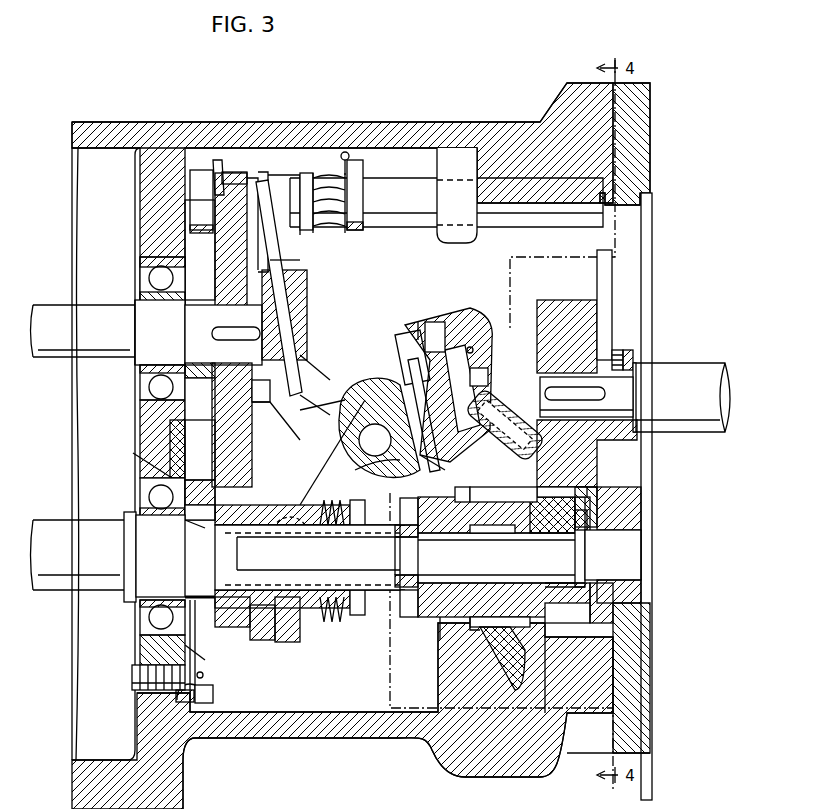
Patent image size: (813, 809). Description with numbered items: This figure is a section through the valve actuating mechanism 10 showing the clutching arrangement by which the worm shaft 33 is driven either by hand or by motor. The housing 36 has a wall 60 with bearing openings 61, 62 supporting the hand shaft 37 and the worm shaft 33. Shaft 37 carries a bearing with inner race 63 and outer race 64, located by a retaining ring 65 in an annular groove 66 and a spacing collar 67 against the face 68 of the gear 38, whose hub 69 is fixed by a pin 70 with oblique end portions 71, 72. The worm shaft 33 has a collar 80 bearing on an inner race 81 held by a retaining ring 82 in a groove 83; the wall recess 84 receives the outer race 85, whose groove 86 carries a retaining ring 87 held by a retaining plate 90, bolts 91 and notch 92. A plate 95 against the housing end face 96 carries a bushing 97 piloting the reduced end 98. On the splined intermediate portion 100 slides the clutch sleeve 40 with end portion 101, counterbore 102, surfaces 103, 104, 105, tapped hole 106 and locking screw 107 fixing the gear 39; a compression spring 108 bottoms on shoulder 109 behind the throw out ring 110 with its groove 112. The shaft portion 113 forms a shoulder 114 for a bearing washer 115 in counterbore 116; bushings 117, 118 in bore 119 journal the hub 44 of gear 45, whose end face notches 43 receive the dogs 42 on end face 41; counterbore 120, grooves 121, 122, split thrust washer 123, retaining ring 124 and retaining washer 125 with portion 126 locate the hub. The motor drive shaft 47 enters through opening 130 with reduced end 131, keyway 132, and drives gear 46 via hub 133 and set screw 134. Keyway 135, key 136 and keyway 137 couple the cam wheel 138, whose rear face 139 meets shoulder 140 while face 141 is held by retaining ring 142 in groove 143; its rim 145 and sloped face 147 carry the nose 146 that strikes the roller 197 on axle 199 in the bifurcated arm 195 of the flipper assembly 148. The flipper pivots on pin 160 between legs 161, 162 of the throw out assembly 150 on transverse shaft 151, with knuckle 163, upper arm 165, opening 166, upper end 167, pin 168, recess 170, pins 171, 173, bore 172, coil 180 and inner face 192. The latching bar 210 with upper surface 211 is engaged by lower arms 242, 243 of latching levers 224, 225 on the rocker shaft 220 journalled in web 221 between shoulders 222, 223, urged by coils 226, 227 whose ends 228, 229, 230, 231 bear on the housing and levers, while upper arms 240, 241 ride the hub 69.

The transmission 10 is at (494, 372).
The worm shaft 33 is at (100, 595).
The main housing 36 is at (325, 725).
The shaft 37 is at (95, 305).
The gear 38 is at (243, 468).
The gear 39 is at (250, 628).
The clutch sleeve 40 is at (285, 620).
The end face 41 is at (365, 500).
The dogs 42 is at (365, 515).
The notches 43 is at (410, 500).
The hub 44 is at (445, 620).
The gear 45 is at (569, 625).
The drive gear 46 is at (600, 318).
The drive shaft 47 is at (692, 363).
The wall 60 is at (140, 426).
The bearing opening 61 is at (140, 257).
The bearing opening 62 is at (140, 480).
The inner race 63 is at (140, 378).
The outer race 64 is at (185, 255).
The retaining ring 65 is at (135, 365).
The annular groove 66 is at (133, 326).
The spacing collar 67 is at (199, 372).
The face 68 is at (200, 448).
The hub 69 is at (300, 290).
The pin 70 is at (262, 354).
The end portion 71 is at (302, 262).
The end portion 72 is at (318, 393).
The collar 80 is at (124, 548).
The inner race 81 is at (142, 612).
The retaining ring 82 is at (198, 532).
The circumferential groove 83 is at (185, 553).
The recess 84 is at (192, 454).
The outer race 85 is at (140, 645).
The circumferential groove 86 is at (141, 461).
The retaining ring 87 is at (205, 665).
The retaining plate 90 is at (190, 700).
The bolts 91 is at (210, 688).
The circumferential notch 92 is at (150, 665).
The plate 95 is at (640, 695).
The end face portion 96 is at (582, 753).
The bushing 97 is at (640, 588).
The reduced end portion 98 is at (643, 548).
The intermediate portion 100 is at (388, 590).
The end portion 101 is at (202, 512).
The counterbore 102 is at (222, 530).
The external surface 103 is at (220, 495).
The intermediate portion 104 is at (329, 452).
The end portion 105 is at (385, 468).
The tapped hole 106 is at (205, 597).
The locking screw 107 is at (229, 627).
The compression spring 108 is at (332, 625).
The shoulder 109 is at (340, 500).
The throw out ring 110 is at (288, 592).
The circumferential groove 112 is at (266, 505).
The shaft portion 113 is at (515, 565).
The shoulder 114 is at (431, 530).
The bearing washer 115 is at (422, 575).
The counterbore 116 is at (402, 556).
The bushing 117 is at (481, 533).
The bushing 118 is at (540, 533).
The bore 119 is at (510, 533).
The counterbore 120 is at (585, 610).
The circumferential groove 121 is at (580, 570).
The circumferential groove 122 is at (598, 560).
The split thrust washer 123 is at (578, 540).
The retaining ring 124 is at (610, 525).
The retaining washer 125 is at (590, 520).
The portion 126 is at (580, 517).
The enlarged opening 130 is at (630, 205).
The reduced diameter end portion 131 is at (585, 365).
The keyway 132 is at (583, 395).
The hub 133 is at (633, 355).
The set screw 134 is at (625, 350).
The keyway 135 is at (455, 497).
The key 136 is at (535, 463).
The keyway 137 is at (538, 480).
The cam wheel 138 is at (500, 650).
The rear face 139 is at (542, 650).
The shoulder 140 is at (528, 625).
The face 141 is at (468, 638).
The retaining ring 142 is at (470, 625).
The circumferential groove 143 is at (490, 497).
The rim 145 is at (527, 678).
The nose 146 is at (495, 405).
The inner sloped face 147 is at (508, 675).
The flipper assembly 148 is at (510, 330).
The throw out assembly 150 is at (360, 370).
The transverse shaft 151 is at (368, 420).
The pivot pin 160 is at (470, 410).
The upper leg 161 is at (458, 381).
The lower leg 162 is at (445, 465).
The knuckle portion 163 is at (420, 390).
The upper arm 165 is at (420, 320).
The opening 166 is at (440, 322).
The upper end 167 is at (465, 330).
The pin 168 is at (448, 335).
The recess 170 is at (395, 380).
The upstanding pin 171 is at (398, 345).
The bore 172 is at (425, 345).
The depending pin 173 is at (405, 330).
The coil portion 180 is at (475, 345).
The inner face 192 is at (480, 378).
The bifurcated arm 195 is at (487, 410).
The roller 197 is at (460, 435).
The axle 199 is at (515, 420).
The latching bar 210 is at (273, 424).
The flat upper surface 211 is at (315, 367).
The rocker shaft 220 is at (415, 178).
The web 221 is at (477, 232).
The enlarged shoulder 222 is at (200, 170).
The enlarged shoulder 223 is at (360, 165).
The latching lever 224 is at (268, 172).
The latching lever 225 is at (306, 173).
The coiled portion 226 is at (238, 172).
The coiled portion 227 is at (330, 173).
The spring end 228 is at (217, 160).
The spring end 229 is at (347, 160).
The spring end 230 is at (256, 178).
The spring end 231 is at (285, 175).
The upper arm portion 240 is at (232, 240).
The upper arm portion 241 is at (300, 244).
The lower arm portion 242 is at (252, 382).
The lower arm portion 243 is at (325, 400).